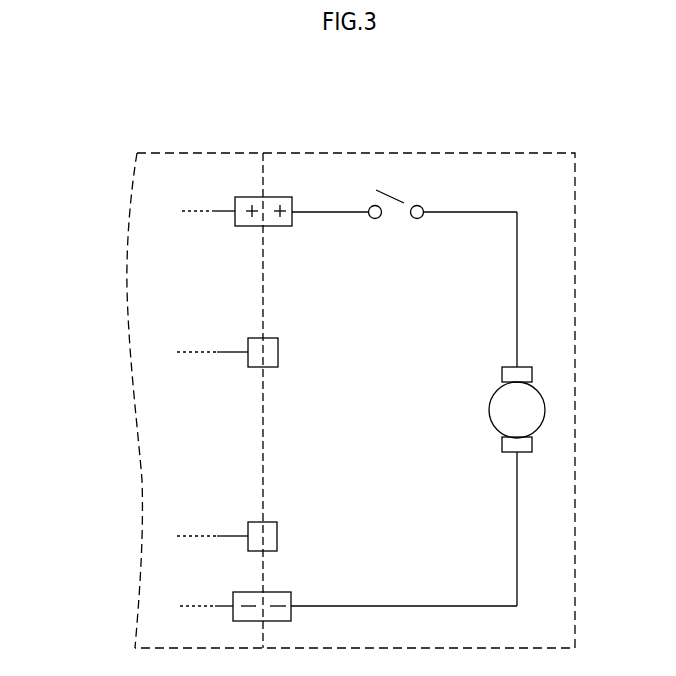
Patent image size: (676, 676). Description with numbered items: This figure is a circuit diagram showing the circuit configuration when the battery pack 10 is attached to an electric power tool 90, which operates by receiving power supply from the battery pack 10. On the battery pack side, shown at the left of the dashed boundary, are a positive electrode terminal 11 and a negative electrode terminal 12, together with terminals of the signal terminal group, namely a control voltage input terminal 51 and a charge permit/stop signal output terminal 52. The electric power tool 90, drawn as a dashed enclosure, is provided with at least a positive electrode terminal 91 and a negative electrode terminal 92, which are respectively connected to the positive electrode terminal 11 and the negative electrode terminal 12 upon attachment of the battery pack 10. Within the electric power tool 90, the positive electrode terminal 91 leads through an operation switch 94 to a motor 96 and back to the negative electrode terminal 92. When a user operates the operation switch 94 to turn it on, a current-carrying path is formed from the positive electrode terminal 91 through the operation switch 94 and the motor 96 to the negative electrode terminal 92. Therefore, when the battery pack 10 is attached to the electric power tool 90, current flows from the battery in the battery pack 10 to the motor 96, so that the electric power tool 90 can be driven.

The battery pack 10 is at (130, 195).
The positive electrode terminal 11 is at (235, 197).
The negative electrode terminal 12 is at (233, 592).
The control voltage input terminal 51 is at (248, 339).
The charge permit/stop signal output terminal 52 is at (248, 523).
The electric power tool 90 is at (418, 153).
The positive electrode terminal 91 is at (292, 226).
The negative electrode terminal 92 is at (292, 592).
The operation switch 94 is at (398, 201).
The motor 96 is at (489, 405).